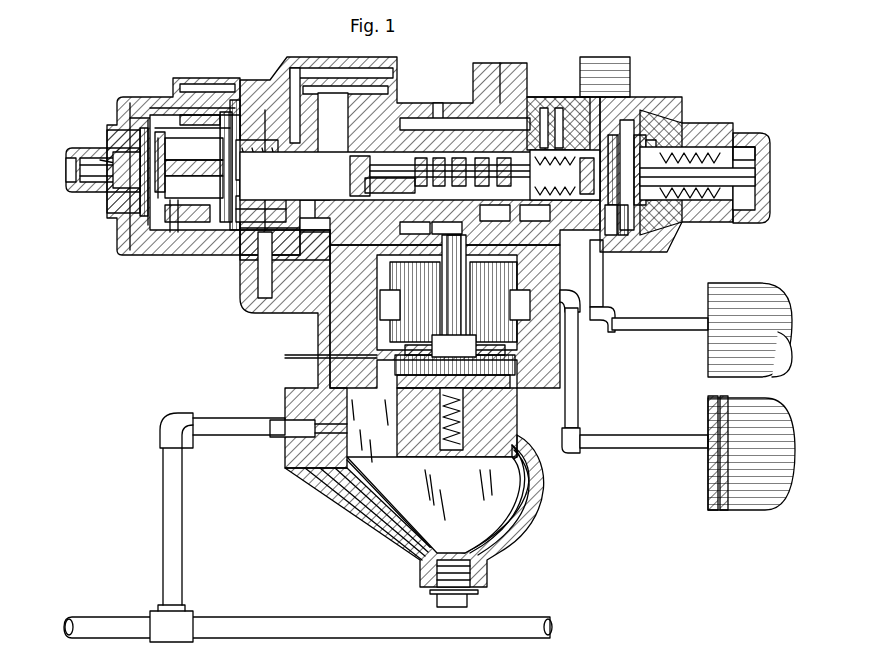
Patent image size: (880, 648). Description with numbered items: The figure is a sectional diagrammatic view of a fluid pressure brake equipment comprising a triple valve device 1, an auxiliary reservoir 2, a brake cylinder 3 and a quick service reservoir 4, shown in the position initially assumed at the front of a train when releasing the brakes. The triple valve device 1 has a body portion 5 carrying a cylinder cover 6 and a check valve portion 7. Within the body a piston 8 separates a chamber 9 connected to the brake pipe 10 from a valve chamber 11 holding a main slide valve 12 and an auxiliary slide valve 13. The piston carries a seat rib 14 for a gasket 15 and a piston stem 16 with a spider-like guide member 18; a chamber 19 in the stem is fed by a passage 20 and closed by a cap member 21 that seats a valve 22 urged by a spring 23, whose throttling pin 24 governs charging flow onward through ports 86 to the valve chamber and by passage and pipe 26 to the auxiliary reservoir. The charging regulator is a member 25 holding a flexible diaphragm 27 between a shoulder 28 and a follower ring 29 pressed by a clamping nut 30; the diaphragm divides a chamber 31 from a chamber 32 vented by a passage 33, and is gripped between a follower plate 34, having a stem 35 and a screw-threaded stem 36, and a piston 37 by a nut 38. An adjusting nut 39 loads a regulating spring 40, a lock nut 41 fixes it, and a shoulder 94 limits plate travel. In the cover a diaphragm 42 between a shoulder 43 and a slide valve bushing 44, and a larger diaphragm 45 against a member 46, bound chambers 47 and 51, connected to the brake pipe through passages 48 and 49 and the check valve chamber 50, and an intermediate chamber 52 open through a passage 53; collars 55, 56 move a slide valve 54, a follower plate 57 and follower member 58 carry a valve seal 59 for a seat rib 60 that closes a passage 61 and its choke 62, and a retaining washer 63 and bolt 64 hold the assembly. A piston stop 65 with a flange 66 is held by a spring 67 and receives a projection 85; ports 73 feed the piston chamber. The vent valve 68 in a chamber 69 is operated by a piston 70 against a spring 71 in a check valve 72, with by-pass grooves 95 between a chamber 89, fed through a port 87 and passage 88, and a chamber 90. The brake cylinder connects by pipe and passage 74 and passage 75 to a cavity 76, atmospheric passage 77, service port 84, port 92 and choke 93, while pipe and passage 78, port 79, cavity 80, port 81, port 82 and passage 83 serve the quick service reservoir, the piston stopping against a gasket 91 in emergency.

The triple valve device 1 is at (300, 57).
The auxiliary reservoir 2 is at (720, 340).
The brake cylinder 3 is at (735, 440).
The quick service reservoir 4 is at (622, 65).
The body portion 5 is at (530, 110).
The cylinder cover 6 is at (245, 300).
The check valve portion 7 is at (522, 520).
The piston 8 is at (318, 100).
The piston chamber 9 is at (280, 62).
The brake pipe 10 is at (105, 622).
The valve chamber 11 is at (440, 150).
The main slide valve 12 is at (361, 173).
The auxiliary slide valve 13 is at (485, 167).
The seat rib 14 is at (372, 68).
The gasket 15 is at (438, 103).
The piston stem 16 is at (470, 118).
The spider-like guide member 18 is at (508, 171).
The chamber 19 is at (552, 150).
The passage 20 is at (333, 124).
The cap or cover member 21 is at (588, 158).
The valve 22 is at (575, 158).
The spring 23 is at (543, 110).
The throttling pin 24 is at (558, 112).
The member 25 is at (642, 135).
The passage and pipe 26 is at (596, 300).
The flexible diaphragm 27 is at (690, 100).
The shoulder 28 is at (652, 140).
The follower ring 29 is at (700, 120).
The clamping nut 30 is at (750, 133).
The chamber 31 is at (627, 135).
The chamber 32 is at (670, 123).
The passage 33 is at (675, 230).
The follower plate 34 is at (720, 135).
The stem 35 is at (755, 176).
The screw-threaded stem 36 is at (650, 240).
The piston 37 is at (615, 135).
The nut 38 is at (612, 235).
The adjusting nut 39 is at (740, 160).
The regulating spring 40 is at (760, 147).
The lock nut 41 is at (765, 205).
The flexible diaphragm 42 is at (160, 128).
The shoulder 43 is at (150, 108).
The slide valve bushing 44 is at (160, 132).
The diaphragm 45 is at (190, 84).
The member 46 is at (200, 115).
The chamber 47 is at (150, 125).
The passage 48 is at (172, 255).
The passage 49 is at (265, 300).
The check valve chamber 50 is at (400, 488).
The chamber 51 is at (250, 235).
The chamber 52 is at (130, 103).
The passage 53 is at (226, 112).
The slide valve 54 is at (190, 214).
The collar 55 is at (140, 118).
The collar 56 is at (172, 138).
The follower plate 57 is at (255, 157).
The follower member 58 is at (143, 140).
The valve seal 59 is at (105, 158).
The seat rib 60 is at (125, 165).
The passage 61 is at (95, 178).
The choke 62 is at (80, 160).
The retaining washer 63 is at (115, 190).
The bolt 64 is at (190, 175).
The piston stop 65 is at (321, 190).
The flange 66 is at (265, 110).
The spring 67 is at (261, 201).
The vent valve 68 is at (490, 365).
The chamber 69 is at (500, 380).
The operating piston 70 is at (468, 290).
The spring 71 is at (465, 420).
The check valve 72 is at (490, 437).
The ports 73 is at (300, 62).
The pipe and passage 74 is at (578, 402).
The passage 75 is at (561, 293).
The cavity 76 is at (463, 171).
The atmospheric passage 77 is at (446, 230).
The pipe and passage 78 is at (535, 85).
The port 79 is at (414, 230).
The cavity 80 is at (421, 171).
The port 81 is at (442, 171).
The port 82 is at (385, 187).
The passage 83 is at (370, 275).
The service port 84 is at (486, 171).
The projection 85 is at (333, 150).
The ports 86 is at (560, 250).
The port 87 is at (172, 215).
The passage 88 is at (234, 100).
The chamber 89 is at (445, 316).
The chamber 90 is at (350, 345).
The gasket 91 is at (321, 227).
The port 92 is at (495, 216).
The choke 93 is at (535, 216).
The shoulder 94 is at (623, 235).
The by-pass grooves 95 is at (455, 302).